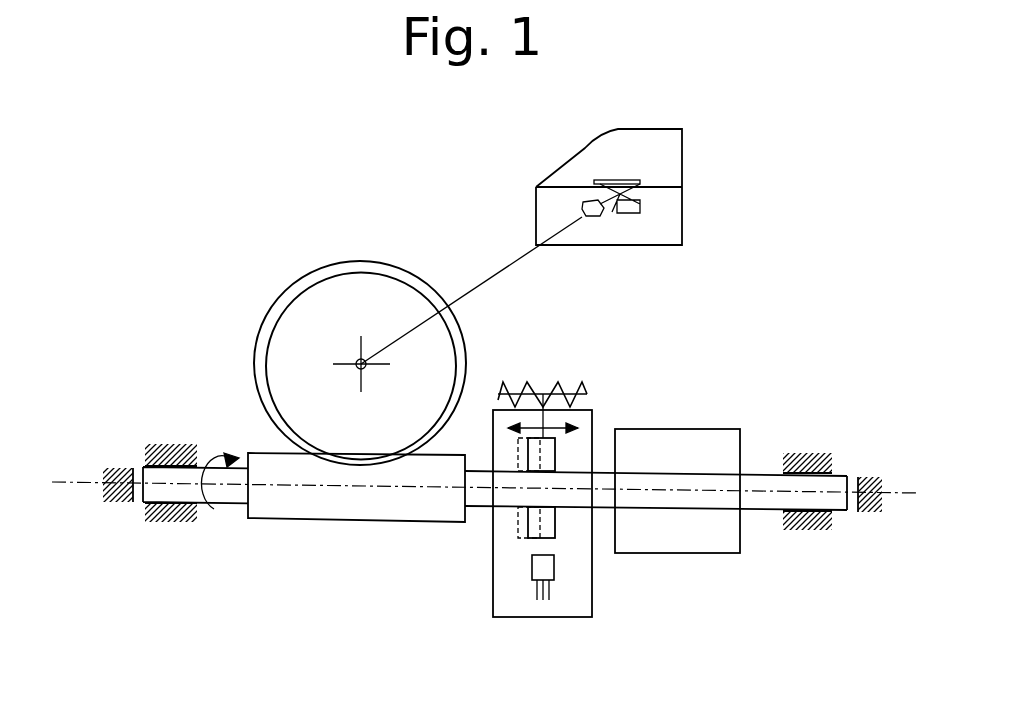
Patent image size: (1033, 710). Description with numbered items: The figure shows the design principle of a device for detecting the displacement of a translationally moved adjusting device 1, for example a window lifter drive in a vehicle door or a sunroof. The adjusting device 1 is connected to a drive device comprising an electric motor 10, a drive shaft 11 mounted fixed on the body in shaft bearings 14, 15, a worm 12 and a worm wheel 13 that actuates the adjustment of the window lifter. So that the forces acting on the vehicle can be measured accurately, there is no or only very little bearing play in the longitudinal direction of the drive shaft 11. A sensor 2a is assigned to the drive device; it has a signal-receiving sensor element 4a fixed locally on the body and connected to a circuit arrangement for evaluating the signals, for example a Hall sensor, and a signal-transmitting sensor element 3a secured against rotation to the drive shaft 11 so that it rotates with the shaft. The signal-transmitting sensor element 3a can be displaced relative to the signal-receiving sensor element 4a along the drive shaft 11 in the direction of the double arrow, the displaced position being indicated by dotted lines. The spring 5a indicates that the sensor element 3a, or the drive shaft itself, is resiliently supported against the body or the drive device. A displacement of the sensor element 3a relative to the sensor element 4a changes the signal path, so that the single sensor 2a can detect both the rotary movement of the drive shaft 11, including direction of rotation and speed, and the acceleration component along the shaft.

The adjusting device 1 is at (662, 217).
The sensor 2a is at (510, 597).
The signal-transmitting sensor element 3a is at (517, 533).
The signal-receiving sensor element 4a is at (543, 570).
The spring 5a is at (530, 390).
The electric motor 10 is at (683, 533).
The drive shaft 11 is at (753, 485).
The worm 12 is at (333, 505).
The worm wheel 13 is at (298, 328).
The shaft bearing 14 is at (142, 507).
The shaft bearing 15 is at (832, 518).